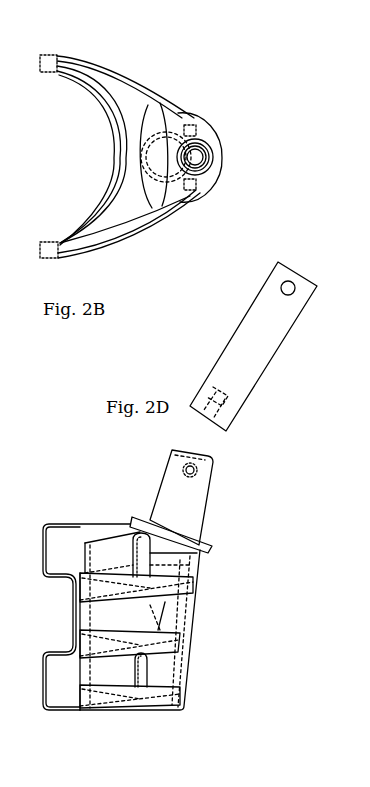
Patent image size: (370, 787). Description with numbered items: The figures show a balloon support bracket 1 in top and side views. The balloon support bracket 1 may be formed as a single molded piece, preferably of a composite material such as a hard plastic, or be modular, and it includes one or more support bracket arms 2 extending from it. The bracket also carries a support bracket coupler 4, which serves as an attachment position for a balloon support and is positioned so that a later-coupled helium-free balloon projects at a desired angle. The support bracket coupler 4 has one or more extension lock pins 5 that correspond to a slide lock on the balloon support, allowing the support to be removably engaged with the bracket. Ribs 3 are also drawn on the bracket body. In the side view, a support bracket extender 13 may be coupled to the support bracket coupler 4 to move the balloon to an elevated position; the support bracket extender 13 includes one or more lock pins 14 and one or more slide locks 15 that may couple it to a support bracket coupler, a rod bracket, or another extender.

In FIG. 2B, the balloon support bracket 1 is at (158, 86).
In FIG. 2D, the balloon support bracket 1 is at (198, 683).
In FIG. 2B, the support bracket arms 2 is at (67, 57).
In FIG. 2D, the ribs 3 is at (142, 562).
In FIG. 2B, the support bracket coupler 4 is at (195, 157).
In FIG. 2D, the support bracket coupler 4 is at (205, 492).
In FIG. 2D, the extension lock pins 5 is at (186, 467).
In FIG. 2D, the support bracket extender 13 is at (276, 357).
In FIG. 2D, the lock pins 14 is at (290, 288).
In FIG. 2D, the slide locks 15 is at (235, 402).